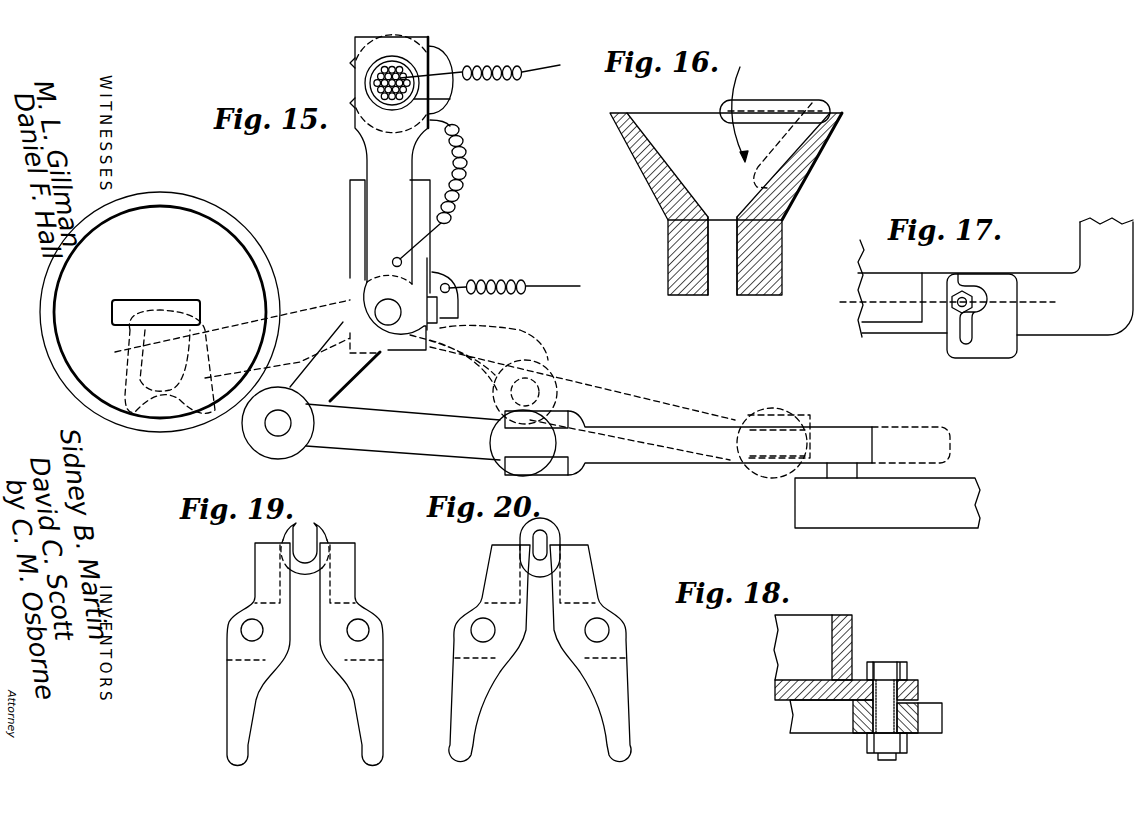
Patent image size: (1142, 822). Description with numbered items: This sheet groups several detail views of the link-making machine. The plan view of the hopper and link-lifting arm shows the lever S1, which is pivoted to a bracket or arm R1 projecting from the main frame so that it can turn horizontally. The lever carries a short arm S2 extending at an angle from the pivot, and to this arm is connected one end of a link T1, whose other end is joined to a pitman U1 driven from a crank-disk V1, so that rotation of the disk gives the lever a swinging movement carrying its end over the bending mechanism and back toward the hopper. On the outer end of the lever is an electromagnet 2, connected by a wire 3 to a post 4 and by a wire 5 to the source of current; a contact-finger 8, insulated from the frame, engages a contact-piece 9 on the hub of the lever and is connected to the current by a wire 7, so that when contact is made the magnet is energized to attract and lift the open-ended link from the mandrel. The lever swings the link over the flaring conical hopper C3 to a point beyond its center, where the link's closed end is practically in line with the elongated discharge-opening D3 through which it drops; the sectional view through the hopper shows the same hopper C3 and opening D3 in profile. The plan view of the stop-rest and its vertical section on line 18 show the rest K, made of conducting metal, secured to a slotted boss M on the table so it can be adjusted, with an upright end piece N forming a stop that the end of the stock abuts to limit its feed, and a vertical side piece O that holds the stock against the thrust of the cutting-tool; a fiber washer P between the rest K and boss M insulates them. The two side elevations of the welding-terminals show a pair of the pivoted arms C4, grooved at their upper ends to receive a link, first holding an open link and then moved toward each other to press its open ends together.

In FIG. 15, the hopper C3 is at (186, 196).
In FIG. 16, the hopper C3 is at (820, 158).
In FIG. 15, the discharge-opening D3 is at (156, 284).
In FIG. 16, the discharge-opening D3 is at (722, 278).
In FIG. 15, the electromagnet 2 is at (365, 82).
In FIG. 15, the wire 5 is at (498, 65).
In FIG. 15, the wire 3 is at (467, 164).
In FIG. 15, the lever S1 is at (383, 160).
In FIG. 15, the bracket or arm R1 is at (352, 234).
In FIG. 15, the post 4 is at (393, 259).
In FIG. 15, the contact-finger 8 is at (450, 280).
In FIG. 15, the wire 7 is at (510, 280).
In FIG. 15, the contact-piece 9 is at (470, 325).
In FIG. 15, the short arm S2 is at (345, 378).
In FIG. 15, the link T1 is at (399, 431).
In FIG. 15, the pitman U1 is at (652, 456).
In FIG. 15, the crank-disk V1 is at (795, 510).
In FIG. 17, the section line 18 is at (947, 300).
In FIG. 17, the rest K is at (858, 315).
In FIG. 18, the rest K is at (775, 686).
In FIG. 17, the upright end piece N is at (910, 316).
In FIG. 18, the upright end piece N is at (808, 622).
In FIG. 17, the boss M is at (998, 350).
In FIG. 18, the boss M is at (918, 717).
In FIG. 18, the vertical side piece O is at (855, 628).
In FIG. 18, the fiber washer P is at (920, 700).
In FIG. 19, the pivoted arms C4 is at (250, 710).
In FIG. 20, the pivoted arms C4 is at (478, 712).